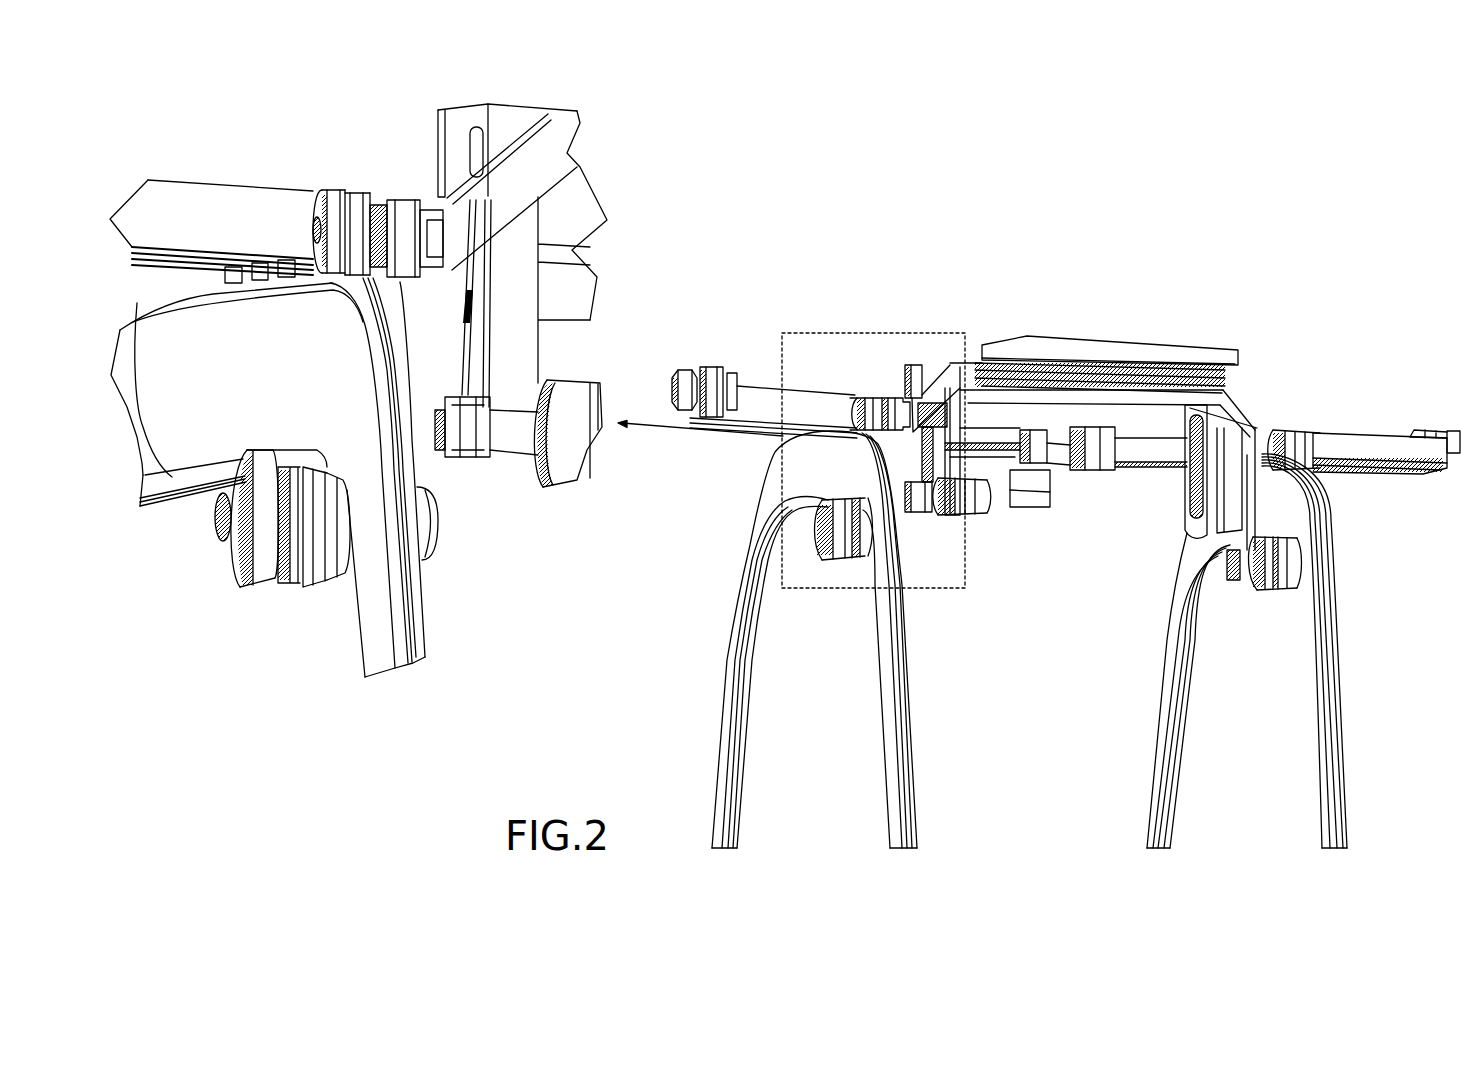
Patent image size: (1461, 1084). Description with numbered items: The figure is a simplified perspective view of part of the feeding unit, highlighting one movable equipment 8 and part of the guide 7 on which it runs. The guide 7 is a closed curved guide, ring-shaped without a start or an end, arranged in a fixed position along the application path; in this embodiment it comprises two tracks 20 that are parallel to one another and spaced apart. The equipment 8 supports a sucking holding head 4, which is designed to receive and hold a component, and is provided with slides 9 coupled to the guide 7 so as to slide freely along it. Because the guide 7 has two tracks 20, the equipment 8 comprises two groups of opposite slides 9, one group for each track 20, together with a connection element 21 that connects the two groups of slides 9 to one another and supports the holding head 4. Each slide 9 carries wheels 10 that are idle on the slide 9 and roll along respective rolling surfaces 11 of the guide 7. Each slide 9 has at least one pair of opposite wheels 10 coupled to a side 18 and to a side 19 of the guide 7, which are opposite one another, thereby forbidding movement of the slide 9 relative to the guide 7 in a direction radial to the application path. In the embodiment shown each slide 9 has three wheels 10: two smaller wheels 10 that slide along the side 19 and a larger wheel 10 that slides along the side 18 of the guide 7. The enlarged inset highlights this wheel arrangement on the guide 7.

The sucking holding head 4 is at (1115, 348).
The guide 7 is at (158, 510).
The equipment 8 is at (1265, 328).
The slide 9 is at (828, 572).
The wheel 10 is at (368, 200).
The rolling surface 11 is at (162, 304).
The side 18 is at (197, 482).
The side 19 is at (192, 287).
The track 20 is at (402, 625).
The connection element 21 is at (983, 404).